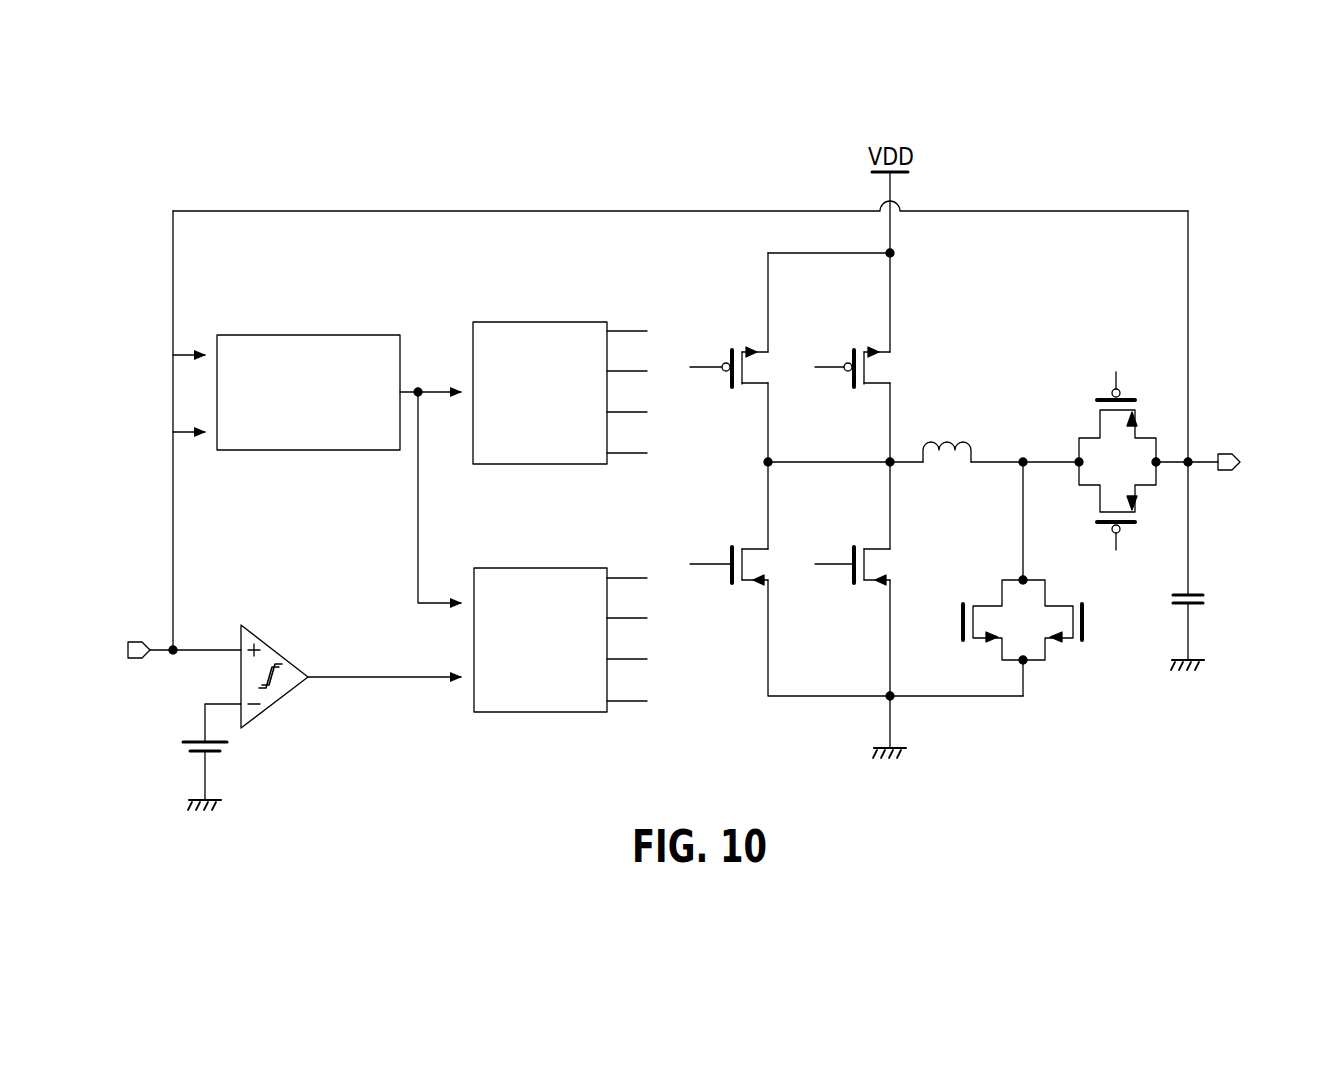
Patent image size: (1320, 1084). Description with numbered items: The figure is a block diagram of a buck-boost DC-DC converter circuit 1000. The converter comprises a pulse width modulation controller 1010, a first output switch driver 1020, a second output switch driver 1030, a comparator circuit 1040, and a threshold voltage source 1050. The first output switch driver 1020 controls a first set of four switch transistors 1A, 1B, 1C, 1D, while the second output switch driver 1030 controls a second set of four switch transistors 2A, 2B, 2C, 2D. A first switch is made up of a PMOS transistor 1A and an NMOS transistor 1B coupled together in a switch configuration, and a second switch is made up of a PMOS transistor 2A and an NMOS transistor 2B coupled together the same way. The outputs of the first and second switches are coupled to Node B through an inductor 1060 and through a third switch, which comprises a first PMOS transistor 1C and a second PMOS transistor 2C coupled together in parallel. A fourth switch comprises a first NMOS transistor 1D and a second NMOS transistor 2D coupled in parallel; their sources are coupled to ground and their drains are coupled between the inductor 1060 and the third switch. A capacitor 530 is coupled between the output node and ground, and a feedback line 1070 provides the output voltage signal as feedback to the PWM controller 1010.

The buck-boost DC-DC converter circuit 1000 is at (1178, 128).
The pulse width modulation (PWM) controller 1010 is at (305, 335).
The first output switch driver 1020 is at (533, 322).
The second output switch driver 1030 is at (533, 568).
The comparator circuit 1040 is at (274, 648).
The threshold voltage source 1050 is at (216, 755).
The inductor 1060 is at (952, 430).
The feedback line 1070 is at (1190, 322).
The capacitor 530 is at (1200, 592).
The PMOS transistor 1A is at (729, 361).
The NMOS transistor 1B is at (729, 558).
The first PMOS transistor 1C is at (1117, 426).
The first NMOS transistor 1D is at (960, 622).
The PMOS transistor 2A is at (849, 361).
The NMOS transistor 2B is at (849, 558).
The second PMOS transistor 2C is at (1117, 538).
The second NMOS transistor 2D is at (1085, 622).